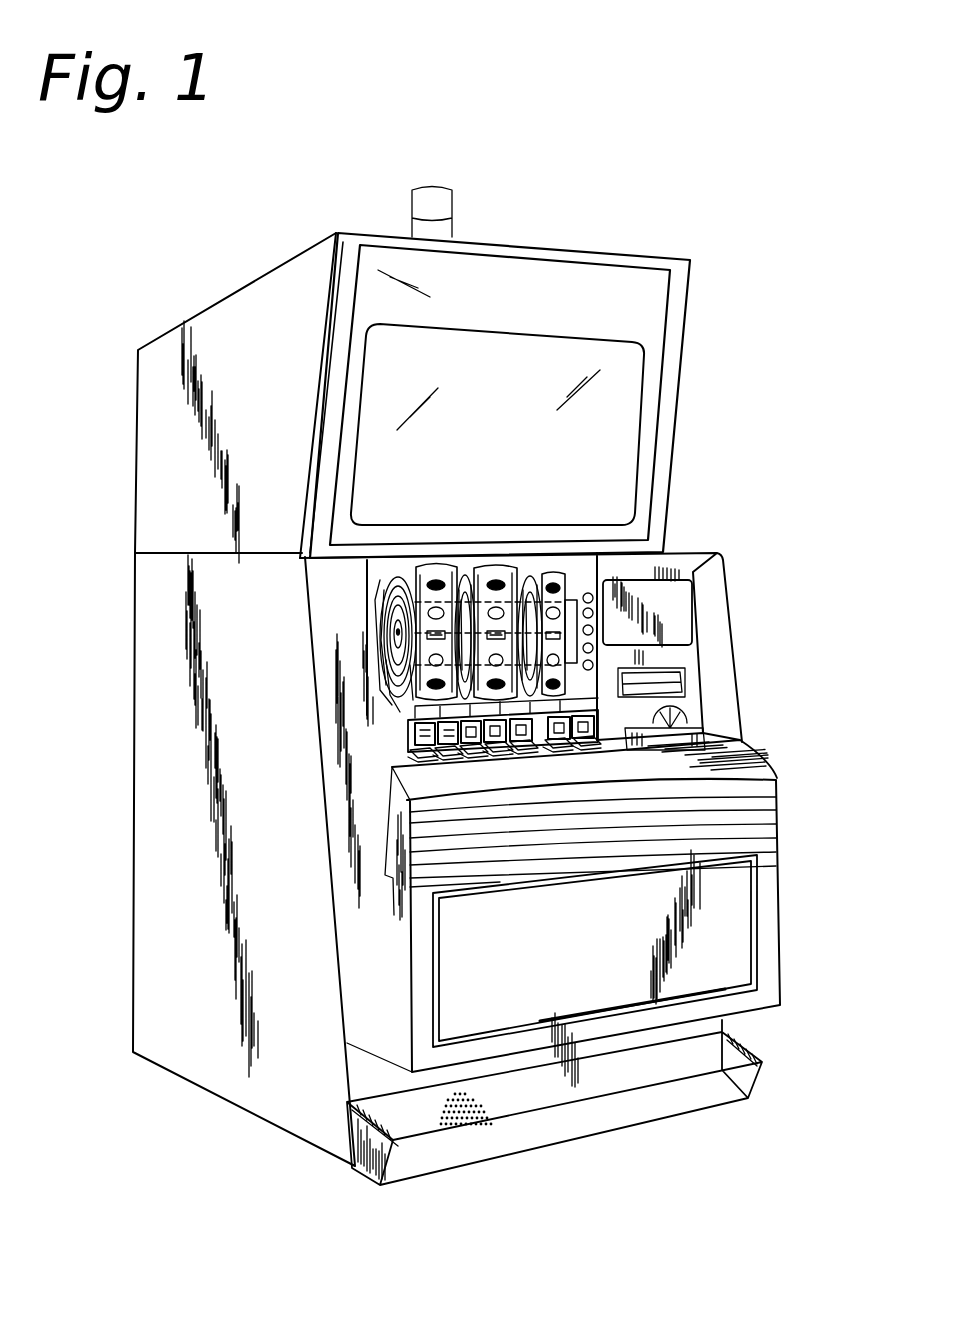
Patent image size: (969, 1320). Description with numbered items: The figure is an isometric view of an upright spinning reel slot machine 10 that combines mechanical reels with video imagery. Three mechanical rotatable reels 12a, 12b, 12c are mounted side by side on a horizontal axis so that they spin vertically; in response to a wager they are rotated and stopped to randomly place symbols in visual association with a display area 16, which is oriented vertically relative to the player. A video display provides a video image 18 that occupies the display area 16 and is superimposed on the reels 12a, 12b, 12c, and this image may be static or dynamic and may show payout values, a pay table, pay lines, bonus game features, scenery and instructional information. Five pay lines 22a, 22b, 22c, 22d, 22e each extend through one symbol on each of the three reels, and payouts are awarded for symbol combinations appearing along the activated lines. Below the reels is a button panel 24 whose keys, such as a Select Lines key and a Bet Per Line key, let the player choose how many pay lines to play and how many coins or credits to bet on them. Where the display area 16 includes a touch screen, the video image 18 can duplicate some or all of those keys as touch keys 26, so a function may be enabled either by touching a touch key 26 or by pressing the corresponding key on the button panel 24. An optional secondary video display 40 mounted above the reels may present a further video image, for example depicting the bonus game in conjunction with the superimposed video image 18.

The spinning reel slot machine 10 is at (229, 221).
The mechanical rotatable reel 12a is at (431, 572).
The mechanical rotatable reel 12b is at (491, 574).
The mechanical rotatable reel 12c is at (549, 576).
The display area 16 is at (600, 578).
The video image 18 is at (577, 592).
The pay line 22a is at (593, 598).
The pay line 22b is at (593, 613).
The pay line 22c is at (593, 630).
The pay line 22d is at (593, 648).
The pay line 22e is at (593, 665).
The button panel 24 is at (439, 777).
The touch keys 26 is at (420, 740).
The secondary video display 40 is at (605, 400).